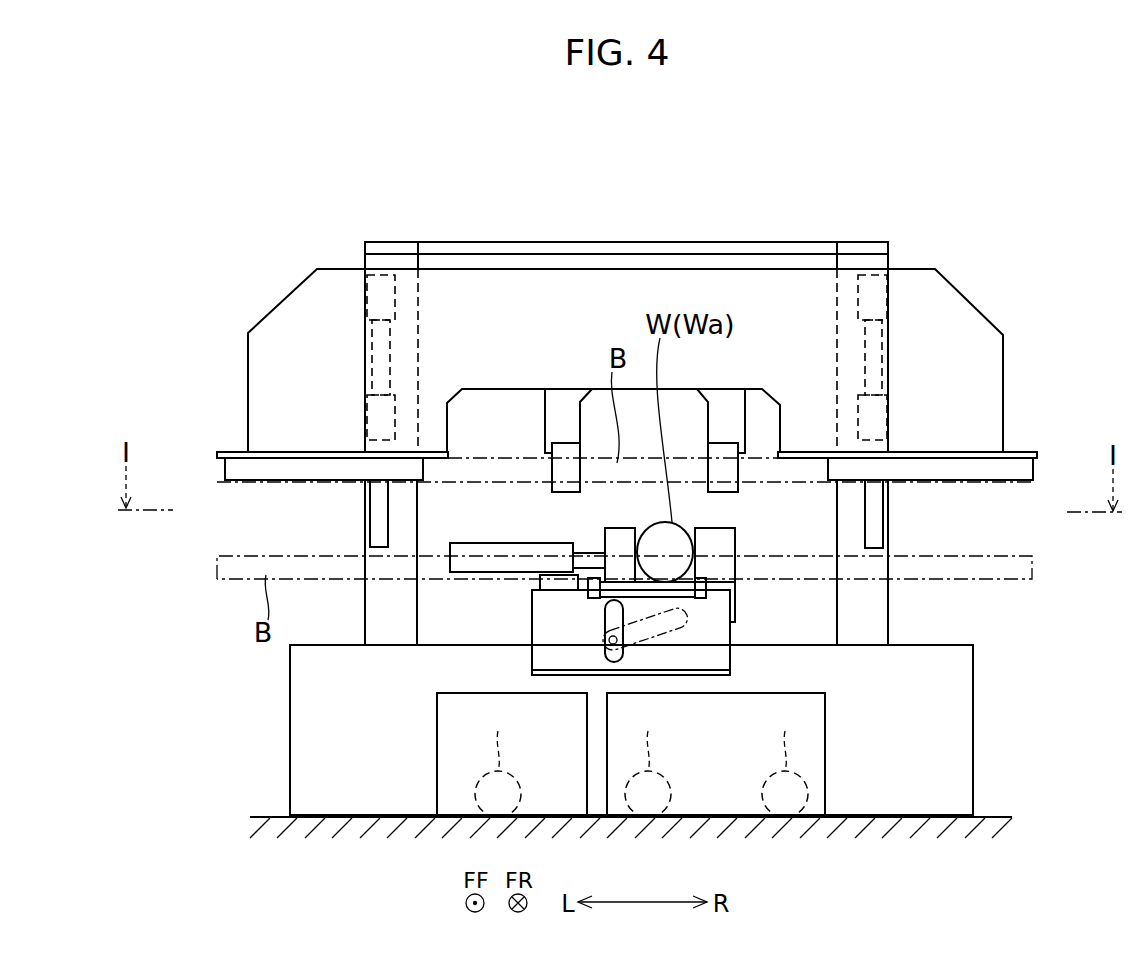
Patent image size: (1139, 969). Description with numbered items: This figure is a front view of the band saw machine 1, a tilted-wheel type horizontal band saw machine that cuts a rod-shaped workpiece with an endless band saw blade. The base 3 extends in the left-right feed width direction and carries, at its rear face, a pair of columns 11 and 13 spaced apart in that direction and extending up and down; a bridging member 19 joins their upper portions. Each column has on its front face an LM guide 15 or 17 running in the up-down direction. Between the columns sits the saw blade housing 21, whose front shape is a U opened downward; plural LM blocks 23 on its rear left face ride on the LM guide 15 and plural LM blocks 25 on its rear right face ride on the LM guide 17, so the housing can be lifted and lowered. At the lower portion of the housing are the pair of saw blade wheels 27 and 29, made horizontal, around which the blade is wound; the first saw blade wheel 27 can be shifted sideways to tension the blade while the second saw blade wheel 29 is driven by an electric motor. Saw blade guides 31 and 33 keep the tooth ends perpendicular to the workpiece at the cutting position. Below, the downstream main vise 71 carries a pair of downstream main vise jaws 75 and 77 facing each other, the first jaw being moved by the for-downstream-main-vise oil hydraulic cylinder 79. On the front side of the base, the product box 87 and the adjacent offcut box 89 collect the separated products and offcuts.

The band saw machine 1 is at (718, 182).
The base 3 is at (288, 720).
The column 11 is at (365, 500).
The column 13 is at (890, 500).
The LM guide 15 is at (367, 356).
The LM guide 17 is at (888, 356).
The bridging member 19 is at (466, 242).
The saw blade housing 21 is at (790, 266).
The LM blocks 23 is at (396, 300).
The LM blocks 25 is at (858, 300).
The first saw blade wheel 27 is at (262, 468).
The second saw blade wheel 29 is at (1003, 473).
The first saw blade guide 31 is at (547, 405).
The second saw blade guide 33 is at (742, 405).
The downstream main vise 71 is at (740, 517).
The first downstream main vise jaw 75 is at (606, 532).
The second downstream main vise jaw 77 is at (738, 540).
The for-downstream-main-vise oil hydraulic cylinder 79 is at (505, 543).
The product box 87 is at (825, 720).
The offcut box 89 is at (437, 722).